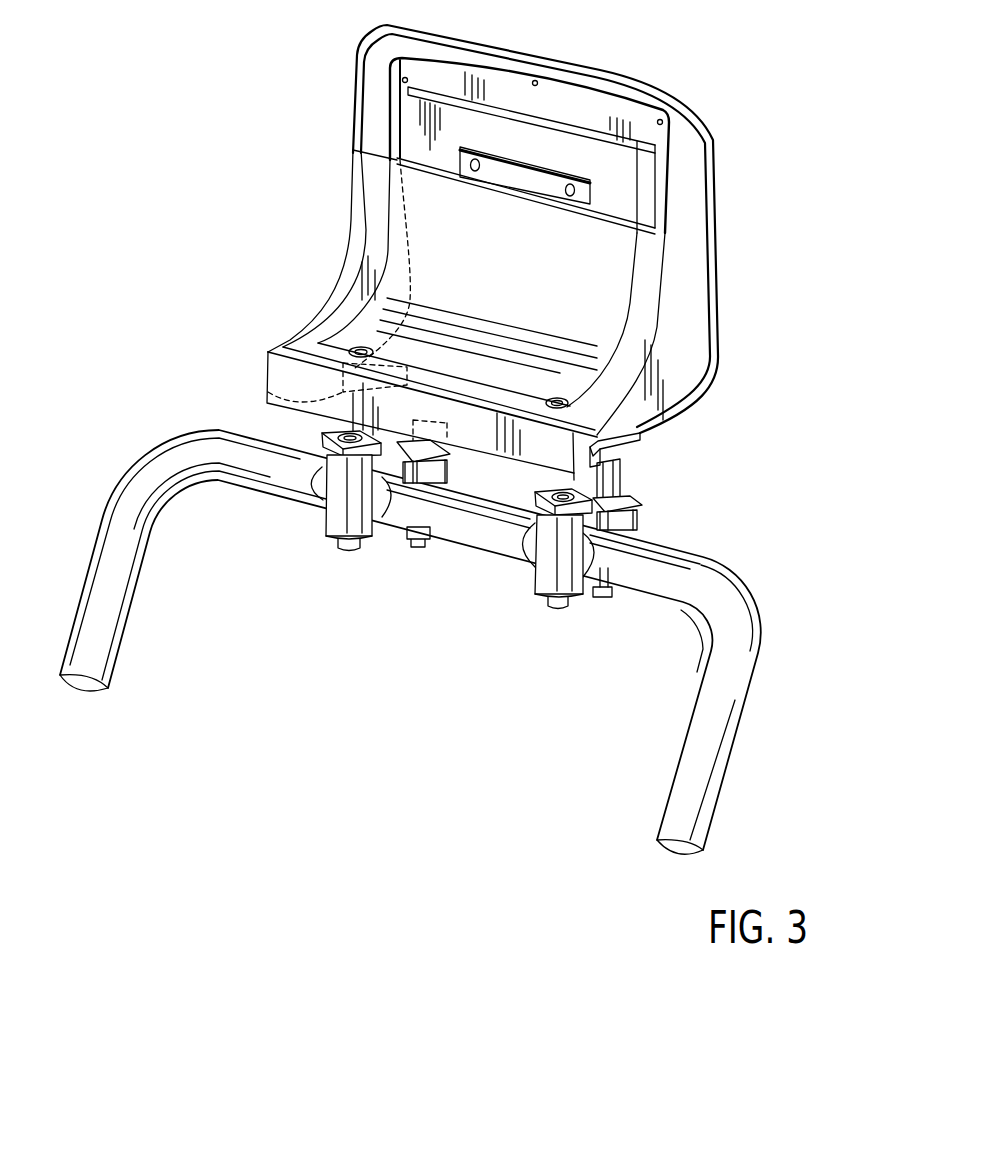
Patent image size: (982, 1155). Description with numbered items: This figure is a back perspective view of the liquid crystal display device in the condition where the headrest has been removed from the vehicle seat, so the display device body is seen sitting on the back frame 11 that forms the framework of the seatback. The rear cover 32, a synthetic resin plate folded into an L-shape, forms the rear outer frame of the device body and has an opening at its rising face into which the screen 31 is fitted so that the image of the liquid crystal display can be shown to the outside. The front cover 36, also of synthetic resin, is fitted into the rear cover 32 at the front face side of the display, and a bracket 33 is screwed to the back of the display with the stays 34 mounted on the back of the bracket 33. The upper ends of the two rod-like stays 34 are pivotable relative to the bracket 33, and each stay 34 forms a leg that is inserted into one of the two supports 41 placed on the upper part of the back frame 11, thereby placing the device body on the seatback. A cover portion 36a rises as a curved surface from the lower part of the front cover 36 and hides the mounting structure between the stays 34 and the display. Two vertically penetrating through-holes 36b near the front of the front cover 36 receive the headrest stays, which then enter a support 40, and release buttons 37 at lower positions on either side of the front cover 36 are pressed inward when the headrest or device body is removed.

The back frame 11 is at (740, 619).
The screen 31 is at (636, 126).
The rear cover 32 is at (720, 375).
The bracket 33 is at (581, 152).
The stays 34 is at (620, 478).
The front cover 36 is at (348, 246).
The cover portion 36a is at (433, 292).
The through-holes 36b is at (350, 348).
The release buttons 37 is at (628, 448).
The support 40 is at (310, 497).
The supports 41 is at (452, 478).